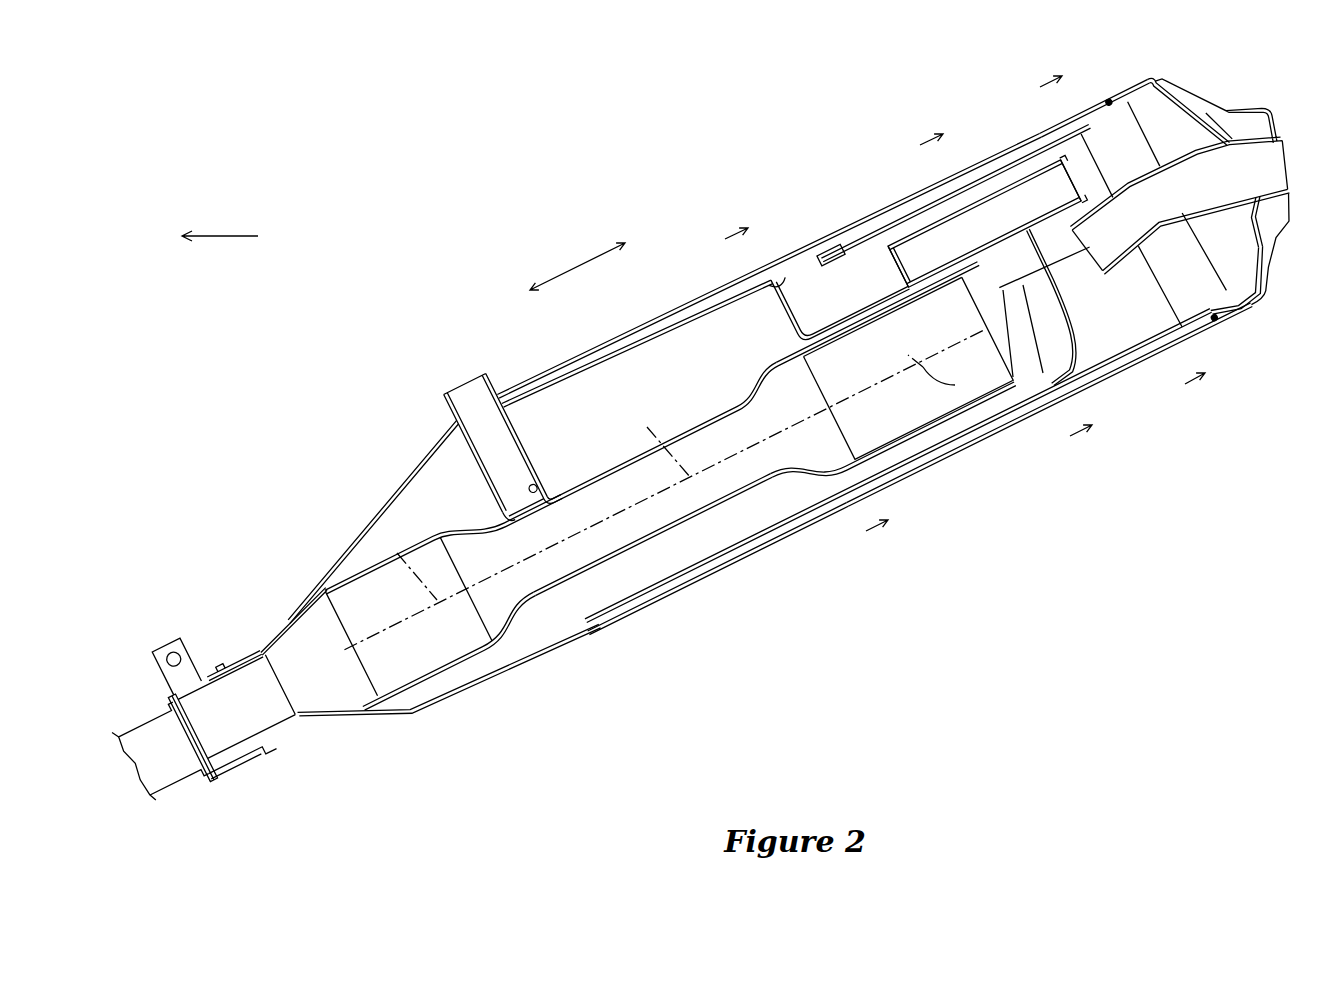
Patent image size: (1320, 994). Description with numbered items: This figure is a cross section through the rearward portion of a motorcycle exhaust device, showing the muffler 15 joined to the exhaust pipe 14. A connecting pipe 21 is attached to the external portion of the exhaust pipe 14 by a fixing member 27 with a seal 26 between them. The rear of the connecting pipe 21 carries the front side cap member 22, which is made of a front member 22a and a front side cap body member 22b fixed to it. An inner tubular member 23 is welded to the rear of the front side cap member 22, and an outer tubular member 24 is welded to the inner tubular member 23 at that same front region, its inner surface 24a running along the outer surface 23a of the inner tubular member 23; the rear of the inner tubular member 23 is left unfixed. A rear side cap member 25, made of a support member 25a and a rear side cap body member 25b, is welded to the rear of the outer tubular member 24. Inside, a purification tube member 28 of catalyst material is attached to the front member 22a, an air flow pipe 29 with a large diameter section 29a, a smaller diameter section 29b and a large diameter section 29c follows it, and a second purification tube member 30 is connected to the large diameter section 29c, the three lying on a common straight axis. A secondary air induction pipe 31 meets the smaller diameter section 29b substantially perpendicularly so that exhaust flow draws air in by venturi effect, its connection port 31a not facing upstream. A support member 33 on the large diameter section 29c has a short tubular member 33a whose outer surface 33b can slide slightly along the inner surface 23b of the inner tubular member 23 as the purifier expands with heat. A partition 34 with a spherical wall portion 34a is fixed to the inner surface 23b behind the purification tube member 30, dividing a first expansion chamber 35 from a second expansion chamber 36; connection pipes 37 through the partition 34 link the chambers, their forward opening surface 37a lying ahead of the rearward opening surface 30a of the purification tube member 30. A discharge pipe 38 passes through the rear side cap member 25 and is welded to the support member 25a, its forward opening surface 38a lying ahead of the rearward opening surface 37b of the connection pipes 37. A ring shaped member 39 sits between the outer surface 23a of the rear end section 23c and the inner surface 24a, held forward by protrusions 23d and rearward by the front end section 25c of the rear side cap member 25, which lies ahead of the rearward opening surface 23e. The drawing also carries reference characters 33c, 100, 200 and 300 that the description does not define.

The exhaust pipe 14 is at (148, 728).
The muffler 15 is at (671, 214).
The connecting pipe 21 is at (232, 670).
The front side cap member 22 is at (372, 564).
The front member 22a is at (273, 638).
The front side cap body member 22b is at (423, 457).
The inner tubular member 23 is at (890, 343).
The outer surface 23a is at (750, 543).
The inner surface 23b is at (693, 320).
The rear end section 23c is at (1190, 323).
The protrusions 23d is at (1083, 117).
The rearward opening surface 23e is at (1153, 147).
The outer tubular member 24 is at (920, 468).
The inner surface 24a is at (767, 548).
The rear side cap member 25 is at (1230, 215).
The support member 25a is at (1262, 257).
The rear side cap body member 25b is at (1273, 290).
The front end section 25c is at (1140, 78).
The seal 26 is at (262, 743).
The fixing member 27 is at (178, 645).
The purification tube member 28 is at (437, 700).
The air flow pipe 29 is at (683, 543).
The large diameter section 29a is at (482, 655).
The smaller diameter section 29b is at (655, 542).
The large diameter section 29c is at (927, 432).
The purification tube member 30 is at (913, 373).
The rearward opening surface 30a is at (983, 313).
The secondary air induction pipe 31 is at (520, 410).
The connection port 31a is at (538, 497).
The support member 33 is at (632, 414).
The tubular member 33a is at (765, 280).
The outer surface 33b is at (749, 292).
The upper shell rear portion 33c is at (852, 337).
The partition 34 is at (1062, 317).
The wall portion 34a is at (1070, 320).
The first expansion chamber 35 is at (843, 247).
The second expansion chamber 36 is at (1017, 157).
The connection pipes 37 is at (968, 231).
The forward opening surface 37a is at (887, 243).
The rearward opening surface 37b is at (1067, 178).
The discharge pipe 38 is at (1127, 184).
The forward opening surface 38a is at (1090, 267).
The ring shaped member 39 is at (1216, 320).
The first section 100 is at (789, 385).
The second section 200 is at (988, 291).
The third section 300 is at (1104, 236).